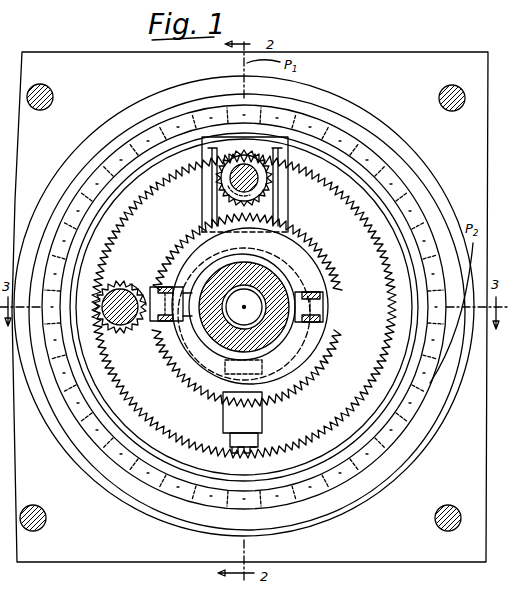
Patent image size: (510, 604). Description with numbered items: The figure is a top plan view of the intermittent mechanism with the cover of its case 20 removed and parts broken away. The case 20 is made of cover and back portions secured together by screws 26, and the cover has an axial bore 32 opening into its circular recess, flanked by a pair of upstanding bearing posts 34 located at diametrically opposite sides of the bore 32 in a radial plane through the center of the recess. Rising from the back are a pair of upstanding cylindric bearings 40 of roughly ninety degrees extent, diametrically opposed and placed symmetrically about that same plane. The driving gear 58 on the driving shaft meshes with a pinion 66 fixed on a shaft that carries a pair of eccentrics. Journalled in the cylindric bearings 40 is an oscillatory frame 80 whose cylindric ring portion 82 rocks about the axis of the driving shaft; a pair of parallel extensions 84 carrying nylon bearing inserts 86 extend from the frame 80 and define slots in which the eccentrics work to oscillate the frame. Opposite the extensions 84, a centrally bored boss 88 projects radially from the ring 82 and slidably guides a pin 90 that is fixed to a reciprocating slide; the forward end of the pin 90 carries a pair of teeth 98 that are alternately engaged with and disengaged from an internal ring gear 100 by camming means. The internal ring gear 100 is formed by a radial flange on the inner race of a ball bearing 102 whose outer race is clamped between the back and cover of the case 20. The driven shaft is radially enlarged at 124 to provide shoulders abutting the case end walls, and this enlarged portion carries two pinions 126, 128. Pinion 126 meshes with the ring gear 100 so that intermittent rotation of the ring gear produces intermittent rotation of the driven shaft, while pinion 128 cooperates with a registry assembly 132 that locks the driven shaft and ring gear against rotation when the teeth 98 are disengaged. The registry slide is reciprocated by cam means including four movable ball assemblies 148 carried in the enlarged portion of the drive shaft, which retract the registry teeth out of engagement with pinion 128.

The case 20 is at (437, 574).
The screws 26 is at (462, 511).
The axial bore 32 is at (507, 398).
The bearing posts 34 is at (212, 153).
The cylindric bearings 40 is at (183, 380).
The driving gear 58 is at (212, 221).
The pinion 66 is at (212, 208).
The oscillatory frame 80 is at (292, 236).
The ring portion 82 is at (337, 258).
The parallel extensions 84 is at (290, 152).
The nylon bearing inserts 86 is at (214, 163).
The centrally bored boss 88 is at (256, 423).
The pin 90 is at (230, 440).
The teeth 98 is at (254, 452).
The internal ring gear 100 is at (294, 470).
The ball bearing 102 is at (188, 502).
The enlarged portion of driven shaft 124 is at (118, 289).
The pinion 126 is at (102, 330).
The pinion 128 is at (136, 277).
The registry assembly 132 is at (300, 347).
The movable ball assemblies 148 is at (316, 291).